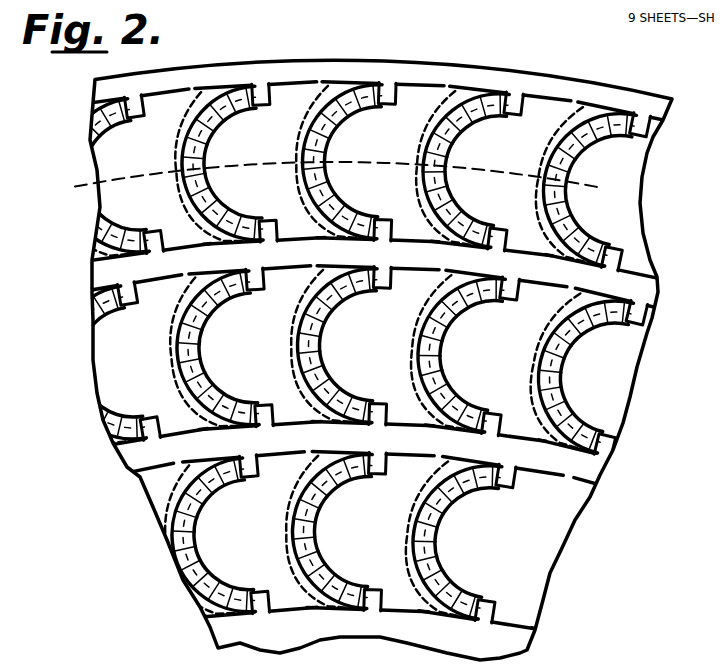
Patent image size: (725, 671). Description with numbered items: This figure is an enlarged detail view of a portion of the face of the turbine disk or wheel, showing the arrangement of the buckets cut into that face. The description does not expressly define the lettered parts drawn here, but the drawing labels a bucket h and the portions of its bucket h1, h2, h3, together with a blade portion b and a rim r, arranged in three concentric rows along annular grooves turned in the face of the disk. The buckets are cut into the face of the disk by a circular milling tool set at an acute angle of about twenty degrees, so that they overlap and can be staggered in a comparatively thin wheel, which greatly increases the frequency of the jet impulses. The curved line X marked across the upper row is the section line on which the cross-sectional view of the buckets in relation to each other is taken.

The bucket h is at (492, 352).
The upper bucket wall h1 is at (534, 313).
The bucket passage h2 is at (452, 354).
The lower bucket wall h3 is at (508, 422).
The blade b is at (610, 212).
The rim r is at (394, 520).
The curved section line X is at (331, 189).